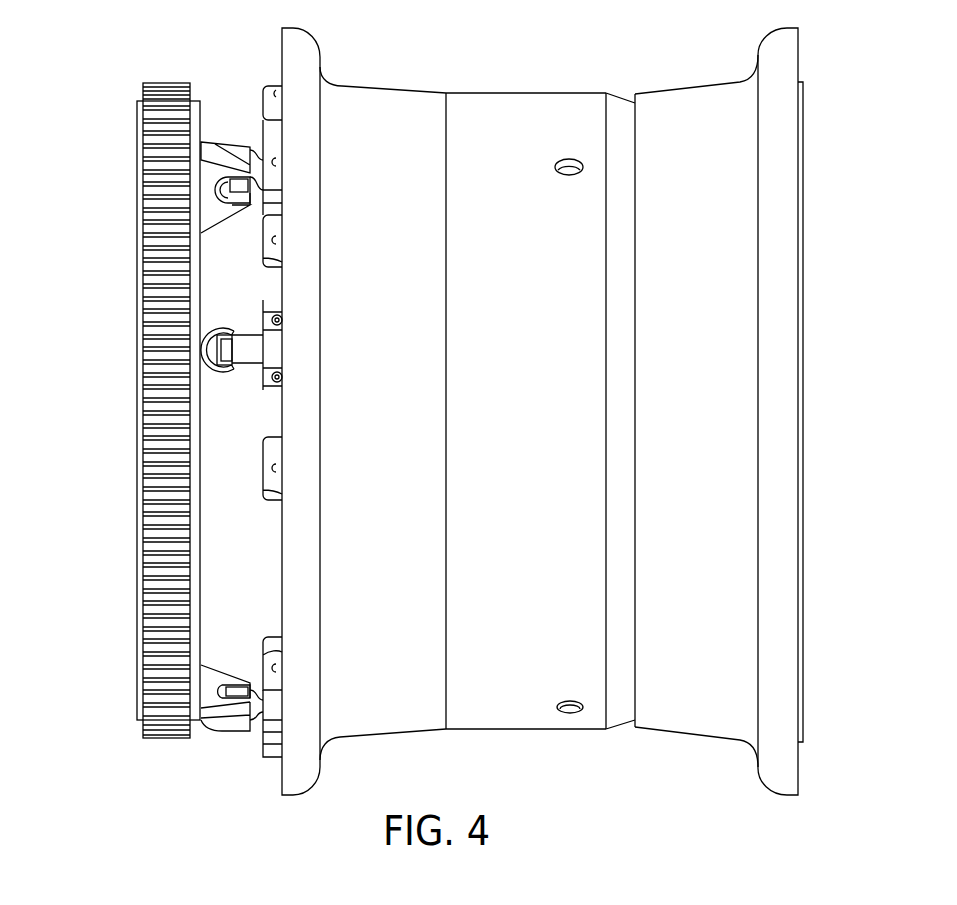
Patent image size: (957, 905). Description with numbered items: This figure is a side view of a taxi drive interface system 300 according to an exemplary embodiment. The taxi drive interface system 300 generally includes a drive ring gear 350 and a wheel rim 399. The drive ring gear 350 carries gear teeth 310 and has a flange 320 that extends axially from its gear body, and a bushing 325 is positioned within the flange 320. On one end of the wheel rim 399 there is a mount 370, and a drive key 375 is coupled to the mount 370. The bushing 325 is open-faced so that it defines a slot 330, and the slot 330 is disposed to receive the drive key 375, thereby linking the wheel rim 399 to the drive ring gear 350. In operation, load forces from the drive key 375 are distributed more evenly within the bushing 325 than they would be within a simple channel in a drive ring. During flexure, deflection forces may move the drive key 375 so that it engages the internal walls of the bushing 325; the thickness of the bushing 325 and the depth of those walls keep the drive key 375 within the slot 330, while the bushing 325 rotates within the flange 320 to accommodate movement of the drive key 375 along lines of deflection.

The taxi drive interface system 300 is at (845, 170).
The gear teeth 310 is at (158, 83).
The flange 320 is at (212, 312).
The bushing 325 is at (224, 350).
The slot 330 is at (245, 330).
The drive ring gear 350 is at (203, 107).
The mount 370 is at (277, 345).
The drive key 375 is at (253, 358).
The wheel rim 399 is at (780, 516).